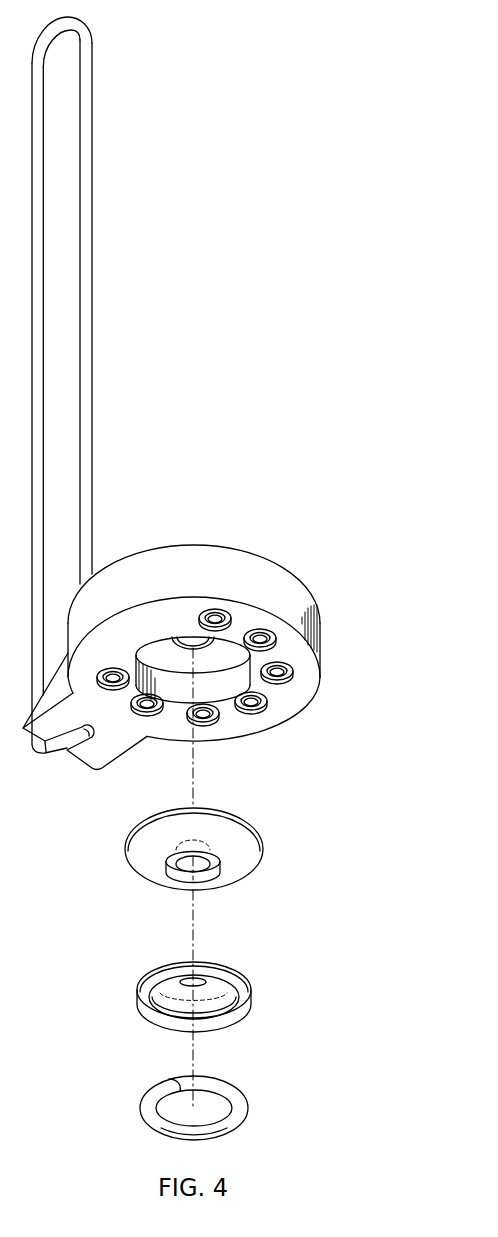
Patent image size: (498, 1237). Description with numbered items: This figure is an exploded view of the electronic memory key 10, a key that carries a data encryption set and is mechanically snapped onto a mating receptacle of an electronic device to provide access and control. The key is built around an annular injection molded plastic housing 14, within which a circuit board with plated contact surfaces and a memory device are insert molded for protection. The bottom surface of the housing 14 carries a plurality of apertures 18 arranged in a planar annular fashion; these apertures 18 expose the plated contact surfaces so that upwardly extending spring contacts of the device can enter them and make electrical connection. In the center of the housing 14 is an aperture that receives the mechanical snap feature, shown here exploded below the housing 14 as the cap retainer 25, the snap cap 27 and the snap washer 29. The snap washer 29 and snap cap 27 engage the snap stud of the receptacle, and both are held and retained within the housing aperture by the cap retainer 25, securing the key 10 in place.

The electronic memory key 10 is at (216, 393).
The housing 14 is at (323, 630).
The apertures 18 is at (292, 673).
The cap retainer 25 is at (248, 845).
The snap cap 27 is at (242, 992).
The snap washer 29 is at (238, 1112).